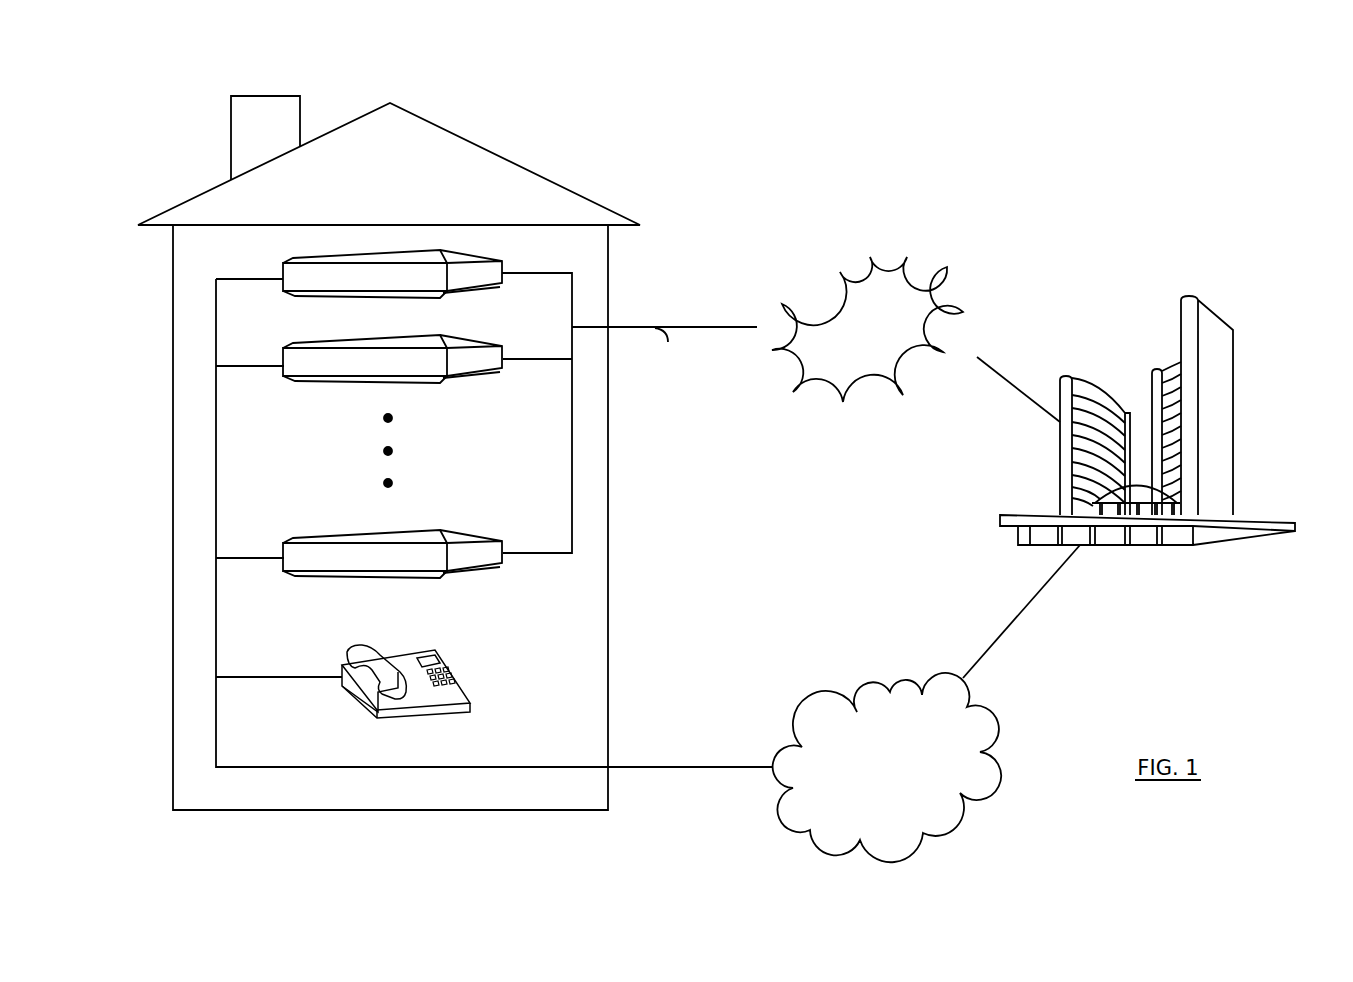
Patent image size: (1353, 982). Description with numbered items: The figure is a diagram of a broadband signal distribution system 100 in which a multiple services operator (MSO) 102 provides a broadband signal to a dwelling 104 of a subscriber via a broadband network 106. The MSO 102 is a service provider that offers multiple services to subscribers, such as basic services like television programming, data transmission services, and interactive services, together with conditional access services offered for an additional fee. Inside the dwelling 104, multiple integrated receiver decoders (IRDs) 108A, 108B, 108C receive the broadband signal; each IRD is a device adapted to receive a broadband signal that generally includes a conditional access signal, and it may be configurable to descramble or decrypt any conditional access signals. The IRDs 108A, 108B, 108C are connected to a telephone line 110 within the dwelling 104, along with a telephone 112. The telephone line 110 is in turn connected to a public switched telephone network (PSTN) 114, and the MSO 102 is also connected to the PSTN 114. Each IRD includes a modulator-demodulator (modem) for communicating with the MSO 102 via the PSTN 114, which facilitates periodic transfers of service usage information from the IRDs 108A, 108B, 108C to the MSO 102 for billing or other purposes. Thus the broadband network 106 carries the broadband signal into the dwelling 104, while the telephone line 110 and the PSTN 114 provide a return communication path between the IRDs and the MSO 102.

The broadband signal distribution system 100 is at (866, 146).
The multiple services operator (MSO) 102 is at (1158, 545).
The dwelling 104 is at (608, 512).
The broadband network 106 is at (858, 361).
The integrated receiver decoder (IRD) 108A is at (281, 292).
The integrated receiver decoder (IRD) 108B is at (281, 377).
The integrated receiver decoder (IRD) 108C is at (281, 572).
The telephone line 110 is at (216, 468).
The telephone 112 is at (453, 663).
The public switched telephone network (PSTN) 114 is at (874, 790).